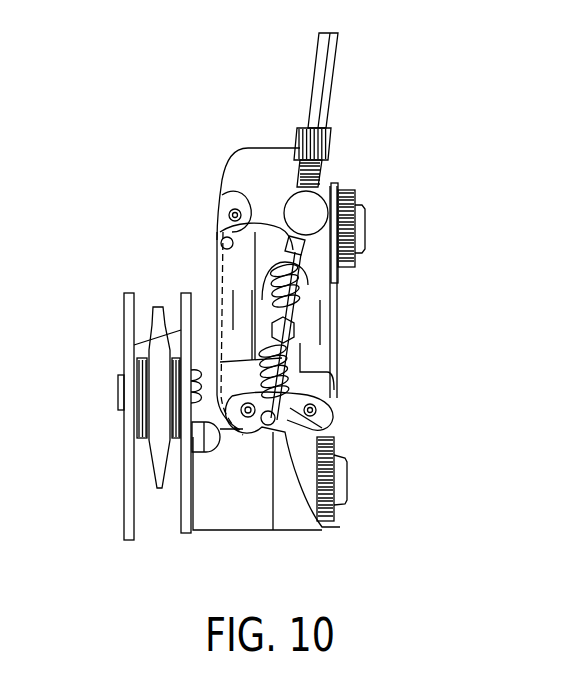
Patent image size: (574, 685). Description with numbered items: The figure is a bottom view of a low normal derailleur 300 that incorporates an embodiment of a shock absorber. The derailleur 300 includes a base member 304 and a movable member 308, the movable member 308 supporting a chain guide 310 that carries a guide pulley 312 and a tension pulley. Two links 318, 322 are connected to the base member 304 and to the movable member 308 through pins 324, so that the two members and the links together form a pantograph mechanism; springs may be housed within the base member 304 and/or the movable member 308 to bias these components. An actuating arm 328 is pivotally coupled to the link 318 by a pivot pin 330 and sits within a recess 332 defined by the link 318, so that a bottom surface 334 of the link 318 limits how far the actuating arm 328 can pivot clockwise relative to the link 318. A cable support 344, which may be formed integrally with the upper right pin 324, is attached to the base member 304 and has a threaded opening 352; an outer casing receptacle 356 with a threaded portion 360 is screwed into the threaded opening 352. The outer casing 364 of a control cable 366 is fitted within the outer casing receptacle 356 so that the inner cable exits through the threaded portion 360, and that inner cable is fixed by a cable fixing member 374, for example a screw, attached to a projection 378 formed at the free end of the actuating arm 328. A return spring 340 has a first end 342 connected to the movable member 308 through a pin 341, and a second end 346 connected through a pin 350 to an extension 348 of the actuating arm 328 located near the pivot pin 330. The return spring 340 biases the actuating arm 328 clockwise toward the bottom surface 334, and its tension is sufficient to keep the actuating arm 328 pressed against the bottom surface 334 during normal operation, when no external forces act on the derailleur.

The low normal derailleur 300 is at (114, 170).
The base member 304 is at (217, 192).
The movable member 308 is at (228, 507).
The chain guide 310 is at (123, 330).
The guide pulley 312 is at (158, 438).
The link 318 is at (217, 250).
The link 322 is at (330, 368).
The pins 324 is at (215, 195).
The actuating arm 328 is at (217, 256).
The pivot pin 330 is at (213, 222).
The recess 332 is at (215, 305).
The bottom surface 334 is at (215, 316).
The return spring 340 is at (300, 368).
The pin 341 is at (322, 528).
The first end 342 is at (325, 432).
The cable support 344 is at (356, 201).
The second end 346 is at (305, 313).
The extension 348 is at (243, 205).
The pin 350 is at (310, 298).
The threaded opening 352 is at (357, 237).
The outer casing receptacle 356 is at (328, 147).
The threaded portion 360 is at (270, 245).
The outer casing 364 is at (312, 67).
The control cable 366 is at (372, 80).
The cable fixing member 374 is at (296, 334).
The projection 378 is at (300, 323).